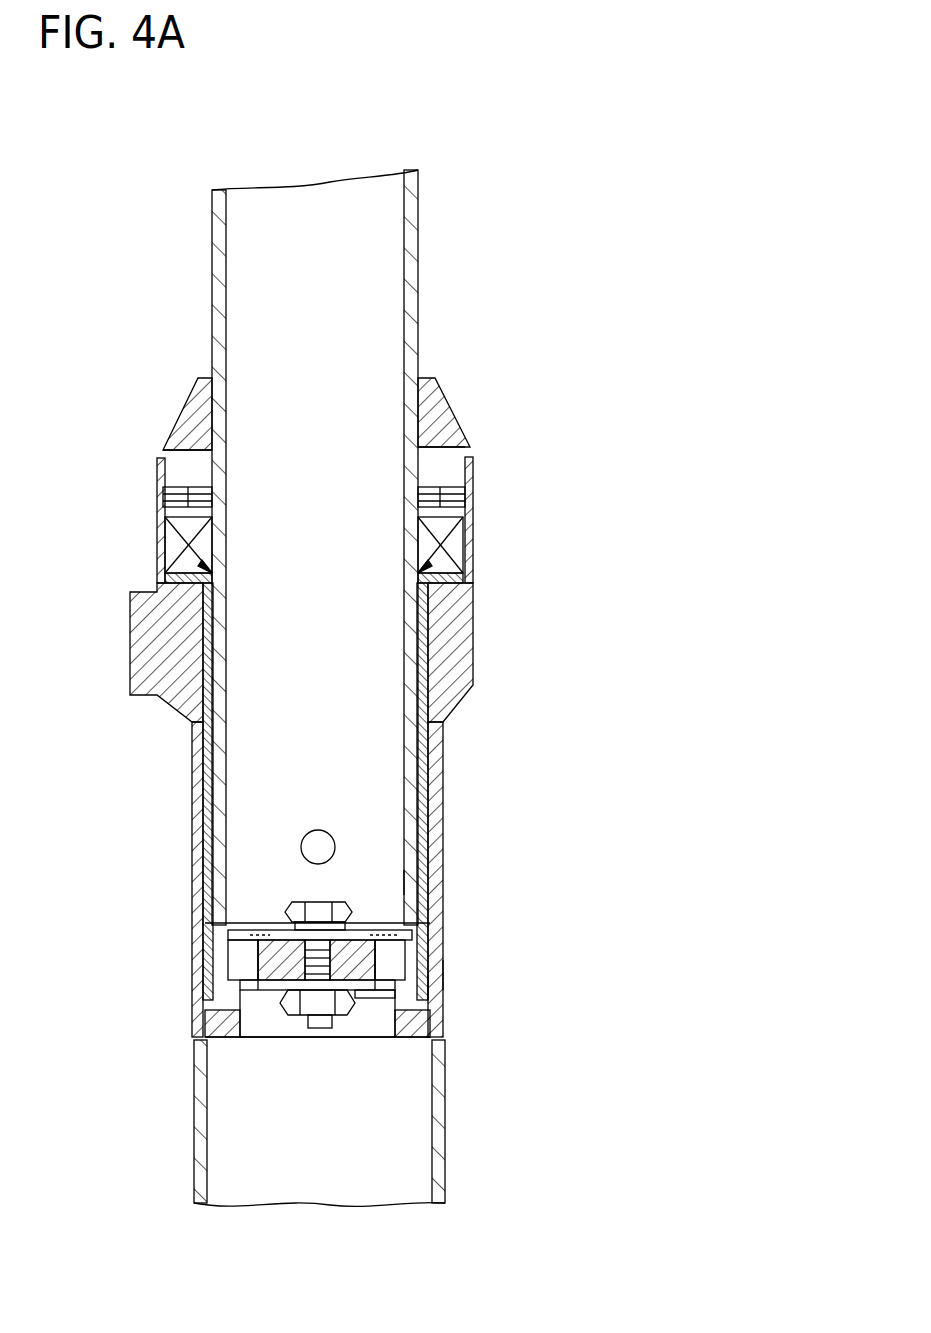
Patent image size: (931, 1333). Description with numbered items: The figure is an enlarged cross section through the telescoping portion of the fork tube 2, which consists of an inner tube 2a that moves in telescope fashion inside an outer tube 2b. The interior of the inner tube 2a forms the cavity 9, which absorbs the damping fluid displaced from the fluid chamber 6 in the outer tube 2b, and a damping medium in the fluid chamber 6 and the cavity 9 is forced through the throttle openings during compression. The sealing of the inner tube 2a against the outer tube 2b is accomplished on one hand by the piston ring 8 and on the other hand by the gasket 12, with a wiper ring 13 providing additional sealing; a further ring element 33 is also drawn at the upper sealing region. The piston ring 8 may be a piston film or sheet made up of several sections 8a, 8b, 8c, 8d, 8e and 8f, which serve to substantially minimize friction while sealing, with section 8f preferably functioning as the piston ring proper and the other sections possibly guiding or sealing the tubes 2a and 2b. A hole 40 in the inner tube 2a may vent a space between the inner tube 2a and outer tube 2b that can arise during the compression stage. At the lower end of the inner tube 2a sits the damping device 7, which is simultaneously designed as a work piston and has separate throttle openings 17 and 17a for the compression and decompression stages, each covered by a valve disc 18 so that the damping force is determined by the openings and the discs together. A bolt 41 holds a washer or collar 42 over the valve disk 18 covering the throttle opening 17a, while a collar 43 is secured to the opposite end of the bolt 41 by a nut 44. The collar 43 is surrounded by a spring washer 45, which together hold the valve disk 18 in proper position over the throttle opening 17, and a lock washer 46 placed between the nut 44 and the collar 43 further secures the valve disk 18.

The cavity 9 is at (247, 248).
The inner tube 2a is at (410, 312).
The wiper ring 13 is at (453, 415).
The ring nut 33 is at (456, 502).
The gasket 12 is at (453, 545).
The piston ring section 8a is at (440, 592).
The piston ring section 8b is at (447, 657).
The piston ring section 8c is at (437, 757).
The piston ring section 8d is at (445, 850).
The piston ring section 8e is at (408, 880).
The fork tube 2 is at (510, 760).
The hole 40 is at (312, 833).
The bolt 41 is at (290, 905).
The washer or collar 42 is at (225, 924).
The valve disc 18 is at (365, 925).
The throttle opening 17 is at (400, 945).
The damping device 7 is at (410, 955).
The piston ring 8 is at (445, 973).
The piston ring section 8f is at (445, 988).
The throttle opening 17a is at (240, 965).
The collar or washer 43 is at (307, 985).
The nut 44 is at (290, 1007).
The lock washer 46 is at (365, 995).
The spring washer 45 is at (380, 1000).
The outer tube 2b is at (440, 1112).
The fluid chamber 6 is at (413, 1177).